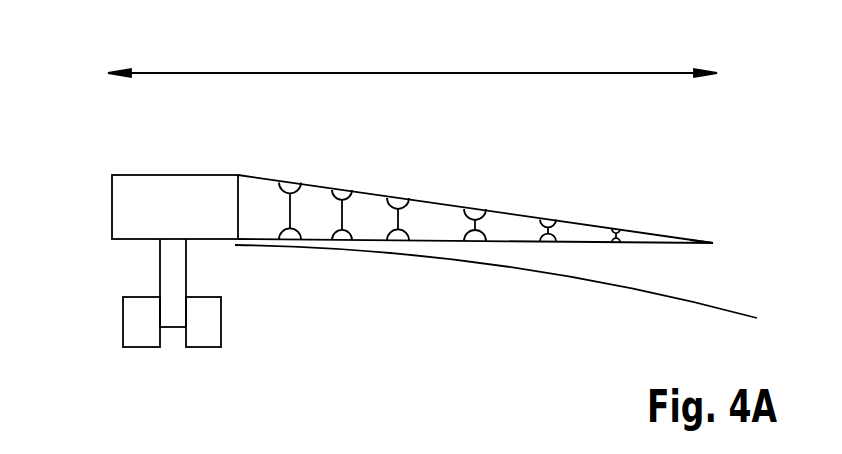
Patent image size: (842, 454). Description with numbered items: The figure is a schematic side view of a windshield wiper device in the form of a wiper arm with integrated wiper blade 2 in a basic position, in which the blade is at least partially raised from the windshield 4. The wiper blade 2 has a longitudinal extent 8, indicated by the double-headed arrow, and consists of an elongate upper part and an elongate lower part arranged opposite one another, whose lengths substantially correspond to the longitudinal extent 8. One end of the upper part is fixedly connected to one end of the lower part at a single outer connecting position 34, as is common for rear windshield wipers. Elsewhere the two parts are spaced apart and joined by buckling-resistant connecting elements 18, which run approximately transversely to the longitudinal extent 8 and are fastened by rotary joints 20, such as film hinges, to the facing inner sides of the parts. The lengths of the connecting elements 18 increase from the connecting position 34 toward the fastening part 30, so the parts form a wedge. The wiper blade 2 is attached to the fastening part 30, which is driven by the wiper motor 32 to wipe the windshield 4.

The wiper blade 2 is at (673, 177).
The windshield 4 is at (690, 306).
The longitudinal extent 8 is at (465, 73).
The connecting element 18 is at (301, 187).
The rotary joint 20 is at (283, 181).
The fastening part 30 is at (127, 208).
The wiper motor 32 is at (135, 323).
The outer connecting position 34 is at (713, 243).